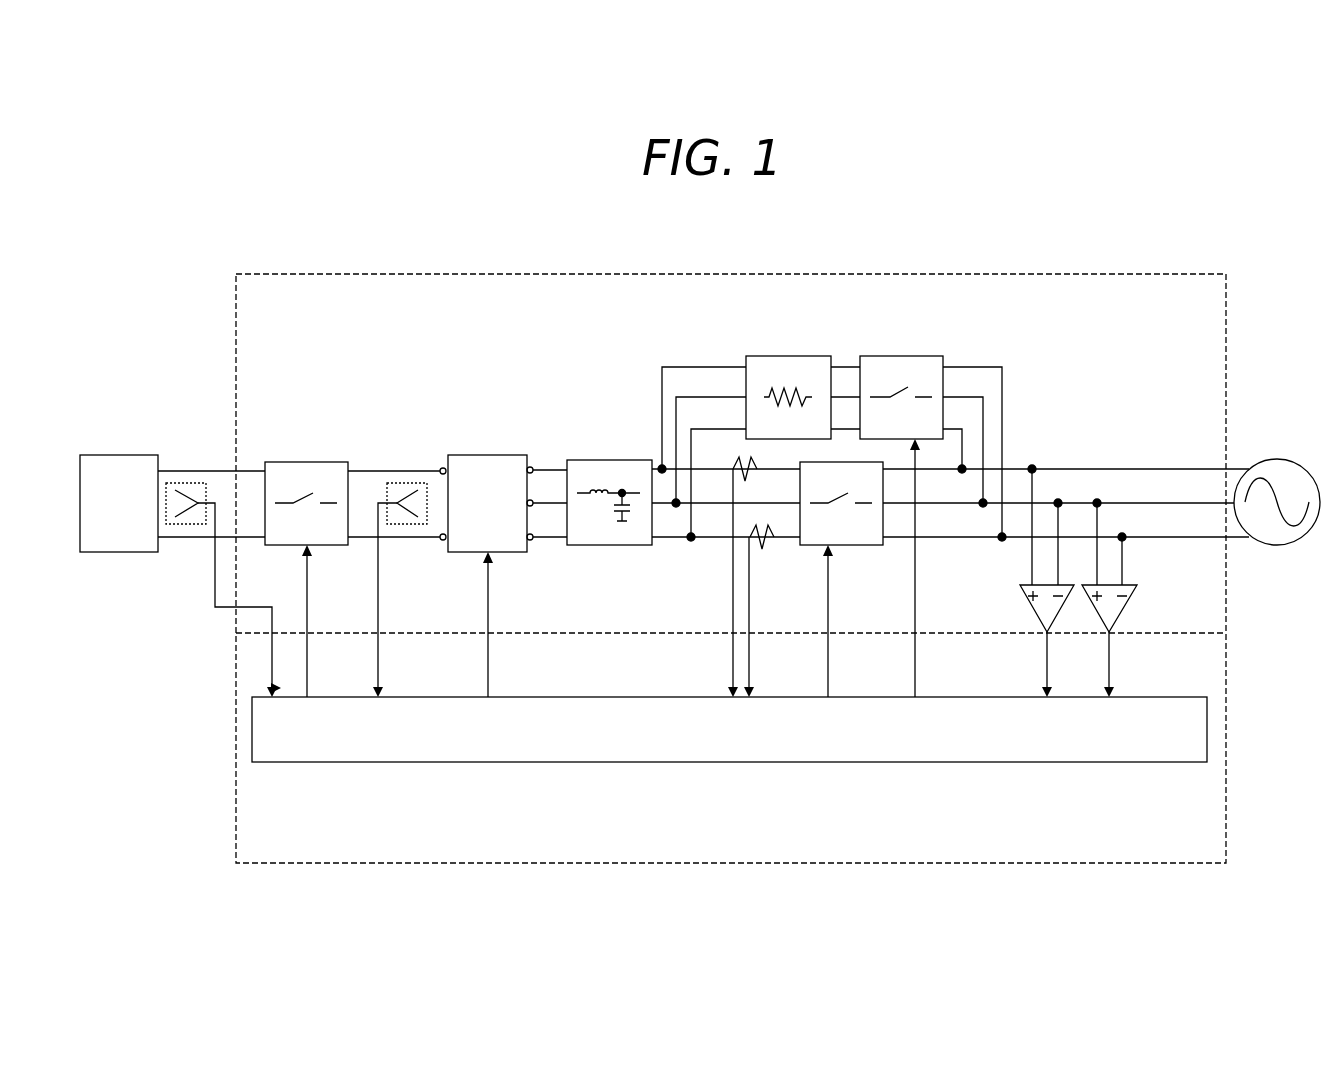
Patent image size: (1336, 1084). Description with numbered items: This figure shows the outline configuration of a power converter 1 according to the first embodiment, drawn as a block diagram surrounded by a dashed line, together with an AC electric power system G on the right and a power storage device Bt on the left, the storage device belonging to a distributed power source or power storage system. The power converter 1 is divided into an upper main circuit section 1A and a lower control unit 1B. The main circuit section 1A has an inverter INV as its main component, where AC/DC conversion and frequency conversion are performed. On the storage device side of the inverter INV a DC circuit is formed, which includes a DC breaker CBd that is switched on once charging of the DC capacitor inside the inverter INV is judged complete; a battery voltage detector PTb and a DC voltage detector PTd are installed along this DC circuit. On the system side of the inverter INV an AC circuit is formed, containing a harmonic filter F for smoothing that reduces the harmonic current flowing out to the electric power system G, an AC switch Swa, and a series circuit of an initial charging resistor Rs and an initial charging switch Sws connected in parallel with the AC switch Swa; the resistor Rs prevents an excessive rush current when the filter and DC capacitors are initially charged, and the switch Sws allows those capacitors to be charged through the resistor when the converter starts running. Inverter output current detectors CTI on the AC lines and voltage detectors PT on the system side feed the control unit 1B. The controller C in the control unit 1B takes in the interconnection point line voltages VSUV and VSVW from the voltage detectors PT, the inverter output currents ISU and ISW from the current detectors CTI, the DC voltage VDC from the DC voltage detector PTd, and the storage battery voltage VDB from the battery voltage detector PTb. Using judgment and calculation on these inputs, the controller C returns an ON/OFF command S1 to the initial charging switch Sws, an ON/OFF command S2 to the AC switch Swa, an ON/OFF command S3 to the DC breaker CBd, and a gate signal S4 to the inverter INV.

The power converter 1 is at (363, 274).
The main circuit section 1A is at (1226, 333).
The control unit 1B is at (1226, 692).
The controller C is at (1137, 762).
The power storage device Bt is at (117, 455).
The battery voltage detector PTb is at (185, 482).
The DC breaker CBd is at (308, 462).
The DC voltage detector PTd is at (407, 482).
The inverter INV is at (487, 455).
The harmonic filter F is at (610, 460).
The initial charging resistor Rs is at (788, 356).
The initial charging switch Sws is at (900, 356).
The AC switch Swa is at (867, 545).
The inverter output current detector CTI is at (727, 477).
The voltage detector PT is at (1082, 583).
The AC electric power system G is at (1276, 459).
The storage battery voltage VDB is at (215, 580).
The DC voltage VDC is at (406, 600).
The ON/OFF command to the initial charging switch S1 is at (915, 657).
The ON/OFF command to the AC switch S2 is at (828, 657).
The ON/OFF command to the DC breaker S3 is at (307, 657).
The gate signal S4 is at (488, 657).
The inverter output current ISU is at (710, 583).
The inverter output current ISW is at (773, 617).
The line voltage VSUV is at (1013, 664).
The line voltage VSVW is at (1146, 664).